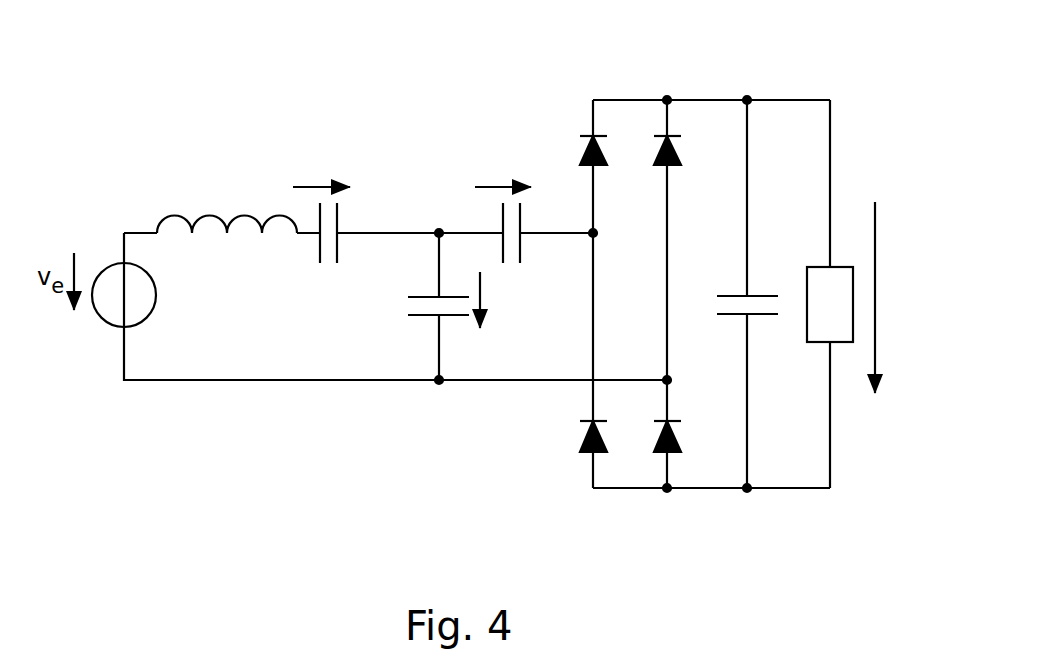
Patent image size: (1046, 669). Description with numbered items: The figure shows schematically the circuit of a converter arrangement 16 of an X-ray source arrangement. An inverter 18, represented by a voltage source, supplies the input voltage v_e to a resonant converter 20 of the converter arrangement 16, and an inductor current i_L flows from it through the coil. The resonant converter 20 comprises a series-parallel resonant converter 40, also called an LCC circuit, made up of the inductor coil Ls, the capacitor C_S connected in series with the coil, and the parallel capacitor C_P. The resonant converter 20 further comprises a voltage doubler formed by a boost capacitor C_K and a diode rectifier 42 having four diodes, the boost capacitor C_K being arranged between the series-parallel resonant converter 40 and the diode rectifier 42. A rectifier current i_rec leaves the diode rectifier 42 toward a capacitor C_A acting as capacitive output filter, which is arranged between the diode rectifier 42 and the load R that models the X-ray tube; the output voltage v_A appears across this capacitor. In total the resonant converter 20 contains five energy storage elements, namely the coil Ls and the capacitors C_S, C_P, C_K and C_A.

The converter arrangement 16 is at (801, 88).
The inverter 18 is at (110, 336).
The resonant converter 20 is at (236, 164).
The series-parallel resonant converter 40 is at (384, 141).
The diode rectifier 42 is at (598, 499).